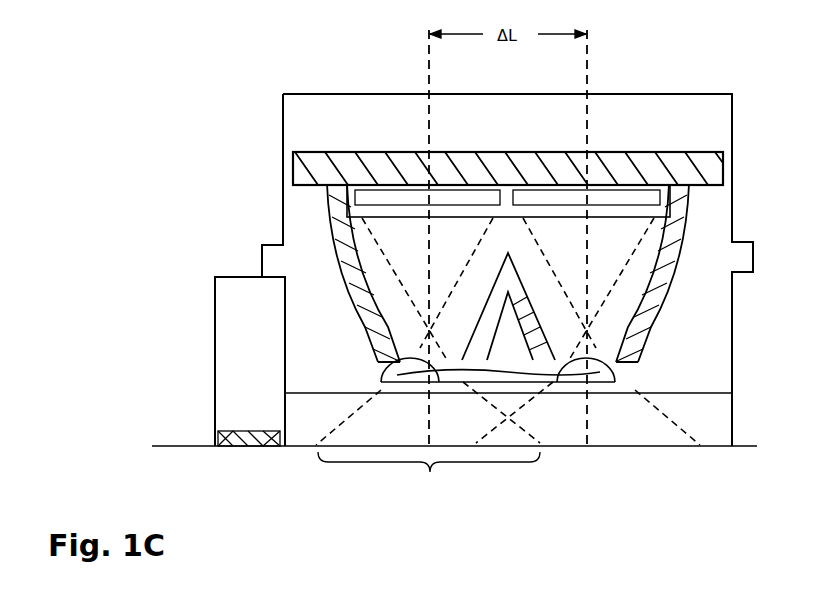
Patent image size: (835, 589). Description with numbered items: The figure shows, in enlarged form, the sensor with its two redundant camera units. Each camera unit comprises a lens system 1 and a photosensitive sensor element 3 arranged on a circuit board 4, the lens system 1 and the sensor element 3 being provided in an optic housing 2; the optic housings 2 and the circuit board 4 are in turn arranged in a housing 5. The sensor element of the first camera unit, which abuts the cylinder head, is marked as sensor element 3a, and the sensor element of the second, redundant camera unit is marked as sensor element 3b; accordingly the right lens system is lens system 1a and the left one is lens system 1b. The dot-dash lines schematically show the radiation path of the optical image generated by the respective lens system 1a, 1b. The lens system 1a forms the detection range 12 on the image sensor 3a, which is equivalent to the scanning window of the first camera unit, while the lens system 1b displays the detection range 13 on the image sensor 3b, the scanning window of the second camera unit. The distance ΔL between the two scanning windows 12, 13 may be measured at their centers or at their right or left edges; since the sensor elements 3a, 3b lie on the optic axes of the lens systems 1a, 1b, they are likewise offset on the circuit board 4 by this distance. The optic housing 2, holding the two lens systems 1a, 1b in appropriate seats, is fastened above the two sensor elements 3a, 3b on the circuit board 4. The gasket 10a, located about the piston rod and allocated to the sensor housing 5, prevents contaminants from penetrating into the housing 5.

The lens system 1 is at (456, 408).
The lens system 1a is at (605, 382).
The lens system 1b is at (397, 382).
The optic housing 2 is at (337, 250).
The photosensitive sensor element 3 is at (398, 205).
The sensor element 3a is at (643, 193).
The sensor element 3b is at (343, 185).
The circuit board 4 is at (597, 170).
The housing 5 is at (730, 127).
The gasket 10a is at (248, 448).
The detection range 12 is at (454, 492).
The detection range 13 is at (429, 484).